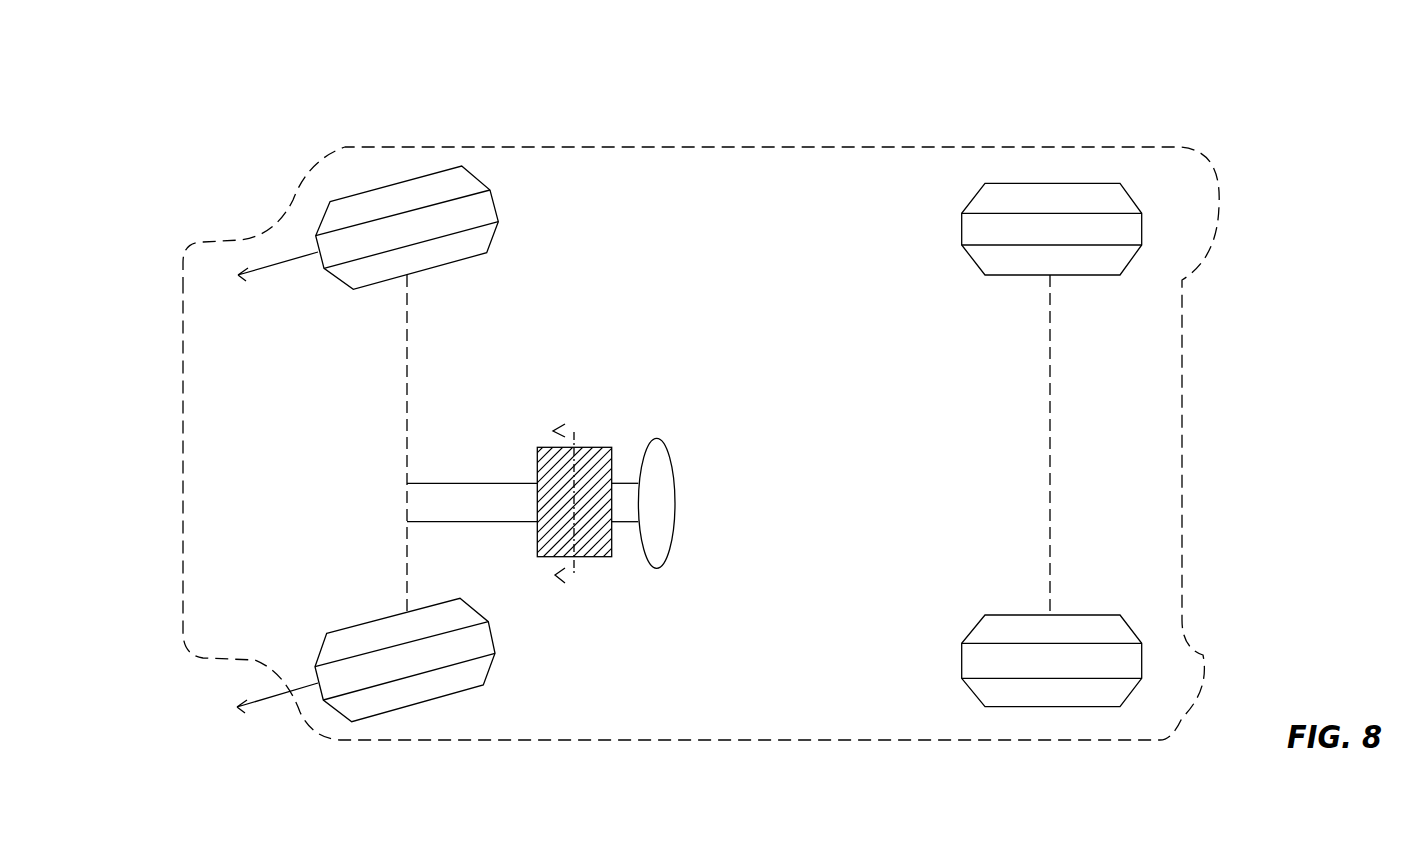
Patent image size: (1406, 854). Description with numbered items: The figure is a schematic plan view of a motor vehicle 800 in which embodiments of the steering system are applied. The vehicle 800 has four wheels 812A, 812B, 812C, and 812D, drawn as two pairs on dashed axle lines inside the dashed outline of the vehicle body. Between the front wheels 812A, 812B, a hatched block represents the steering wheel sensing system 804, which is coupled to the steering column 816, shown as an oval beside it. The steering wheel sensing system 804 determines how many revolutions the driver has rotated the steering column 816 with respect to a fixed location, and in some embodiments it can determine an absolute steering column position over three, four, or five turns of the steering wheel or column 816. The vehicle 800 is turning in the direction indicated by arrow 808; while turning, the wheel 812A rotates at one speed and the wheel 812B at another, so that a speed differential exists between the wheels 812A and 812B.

The motor vehicle 800 is at (927, 125).
The arrow indicating direction of turning 808 is at (182, 458).
The steering wheel sensing system 804 is at (590, 448).
The steering column 816 is at (665, 500).
The wheel 812A is at (495, 655).
The wheel 812B is at (495, 217).
The wheel 812C is at (960, 230).
The wheel 812D is at (962, 667).